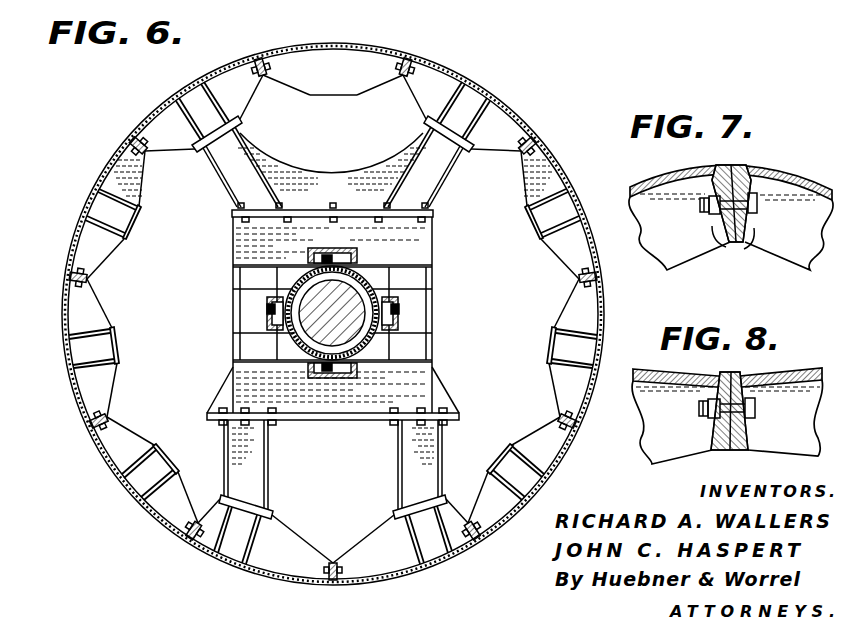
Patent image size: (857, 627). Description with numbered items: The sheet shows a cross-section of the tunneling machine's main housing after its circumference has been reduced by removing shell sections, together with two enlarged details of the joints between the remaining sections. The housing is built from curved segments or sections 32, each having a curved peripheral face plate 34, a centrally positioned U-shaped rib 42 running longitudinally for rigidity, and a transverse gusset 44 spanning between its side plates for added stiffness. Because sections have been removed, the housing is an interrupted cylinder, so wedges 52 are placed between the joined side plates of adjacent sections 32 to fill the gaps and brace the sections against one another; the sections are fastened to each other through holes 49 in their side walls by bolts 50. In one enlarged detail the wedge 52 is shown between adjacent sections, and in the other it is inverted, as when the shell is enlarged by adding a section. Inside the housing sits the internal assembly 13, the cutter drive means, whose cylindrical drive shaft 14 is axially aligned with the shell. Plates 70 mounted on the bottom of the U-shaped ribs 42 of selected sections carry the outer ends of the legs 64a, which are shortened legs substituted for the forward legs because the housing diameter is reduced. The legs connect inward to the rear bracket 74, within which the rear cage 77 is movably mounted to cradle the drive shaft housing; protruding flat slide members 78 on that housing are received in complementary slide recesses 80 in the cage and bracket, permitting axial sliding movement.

In FIG. 6, the internal assembly 13 is at (379, 281).
In FIG. 6, the drive shaft 14 is at (358, 318).
In FIG. 6, the curved segments or sections 32 is at (480, 75).
In FIG. 7, the curved segments or sections 32 is at (812, 176).
In FIG. 8, the curved segments or sections 32 is at (804, 366).
In FIG. 6, the curved peripheral face plate 34 is at (107, 462).
In FIG. 6, the U-shaped rib 42 is at (157, 494).
In FIG. 6, the transverse gusset 44 is at (133, 440).
In FIG. 7, the holes 49 is at (752, 248).
In FIG. 7, the bolts 50 is at (758, 204).
In FIG. 8, the bolts 50 is at (756, 408).
In FIG. 6, the wedges 52 is at (258, 58).
In FIG. 7, the wedges 52 is at (736, 170).
In FIG. 8, the wedges 52 is at (730, 452).
In FIG. 6, the legs 64a is at (232, 180).
In FIG. 6, the plates 70 is at (240, 123).
In FIG. 6, the rear bracket 74 is at (433, 244).
In FIG. 6, the rear cage 77 is at (233, 279).
In FIG. 6, the slide members 78 is at (268, 324).
In FIG. 6, the slide recesses 80 is at (268, 308).